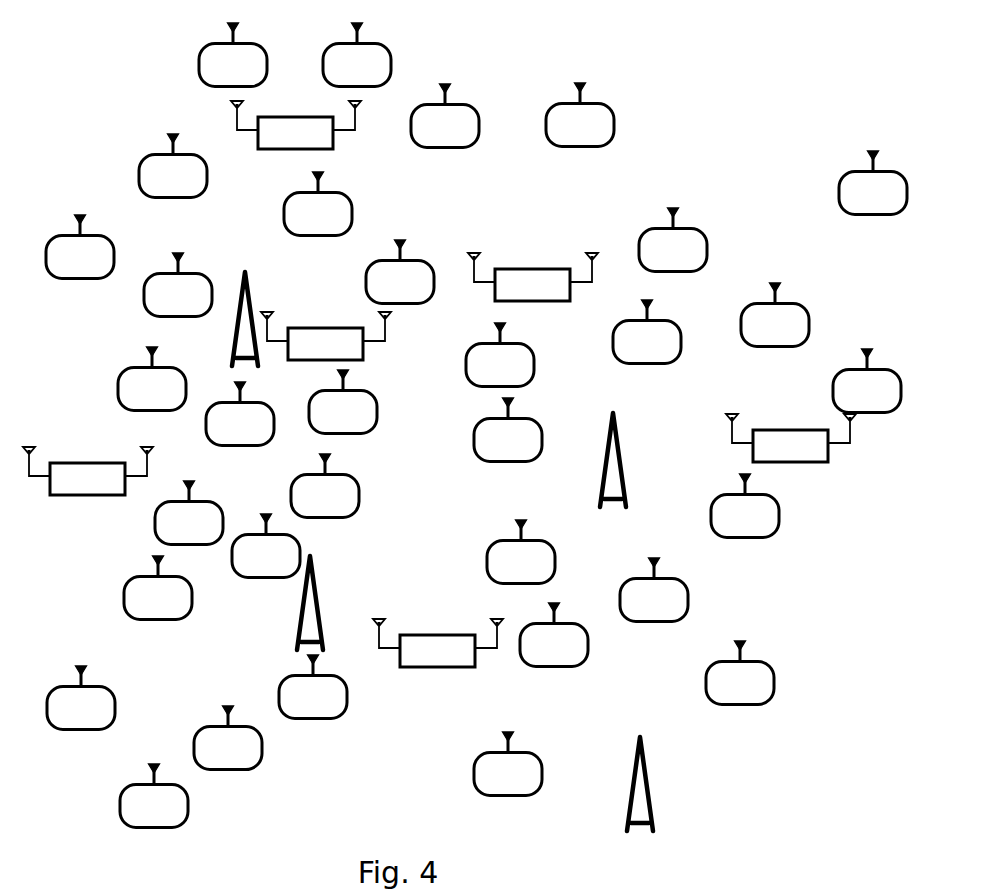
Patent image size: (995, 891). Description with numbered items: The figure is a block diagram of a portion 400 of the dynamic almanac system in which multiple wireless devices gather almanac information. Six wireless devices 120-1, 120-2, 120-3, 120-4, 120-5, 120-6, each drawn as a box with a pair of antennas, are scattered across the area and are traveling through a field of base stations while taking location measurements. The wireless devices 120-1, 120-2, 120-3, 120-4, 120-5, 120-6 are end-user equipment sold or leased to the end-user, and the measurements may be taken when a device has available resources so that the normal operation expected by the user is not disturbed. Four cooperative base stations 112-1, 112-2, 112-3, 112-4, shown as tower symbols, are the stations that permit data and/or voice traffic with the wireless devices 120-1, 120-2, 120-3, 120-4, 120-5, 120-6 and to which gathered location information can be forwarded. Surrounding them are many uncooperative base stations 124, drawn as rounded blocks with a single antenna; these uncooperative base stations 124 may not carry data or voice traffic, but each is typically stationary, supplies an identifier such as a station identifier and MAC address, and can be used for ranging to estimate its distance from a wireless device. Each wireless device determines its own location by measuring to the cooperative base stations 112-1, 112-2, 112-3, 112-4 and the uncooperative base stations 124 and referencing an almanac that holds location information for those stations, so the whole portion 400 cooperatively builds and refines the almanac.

The portion of the dynamic almanac system 400 is at (735, 137).
The uncooperative base station 124 is at (216, 76).
The wireless device 120-1 is at (270, 142).
The wireless device 120-2 is at (300, 354).
The wireless device 120-3 is at (507, 294).
The wireless device 120-4 is at (765, 456).
The wireless device 120-5 is at (412, 660).
The wireless device 120-6 is at (62, 488).
The cooperative base station 112-1 is at (252, 288).
The cooperative base station 112-2 is at (318, 571).
The cooperative base station 112-3 is at (620, 431).
The cooperative base station 112-4 is at (647, 753).